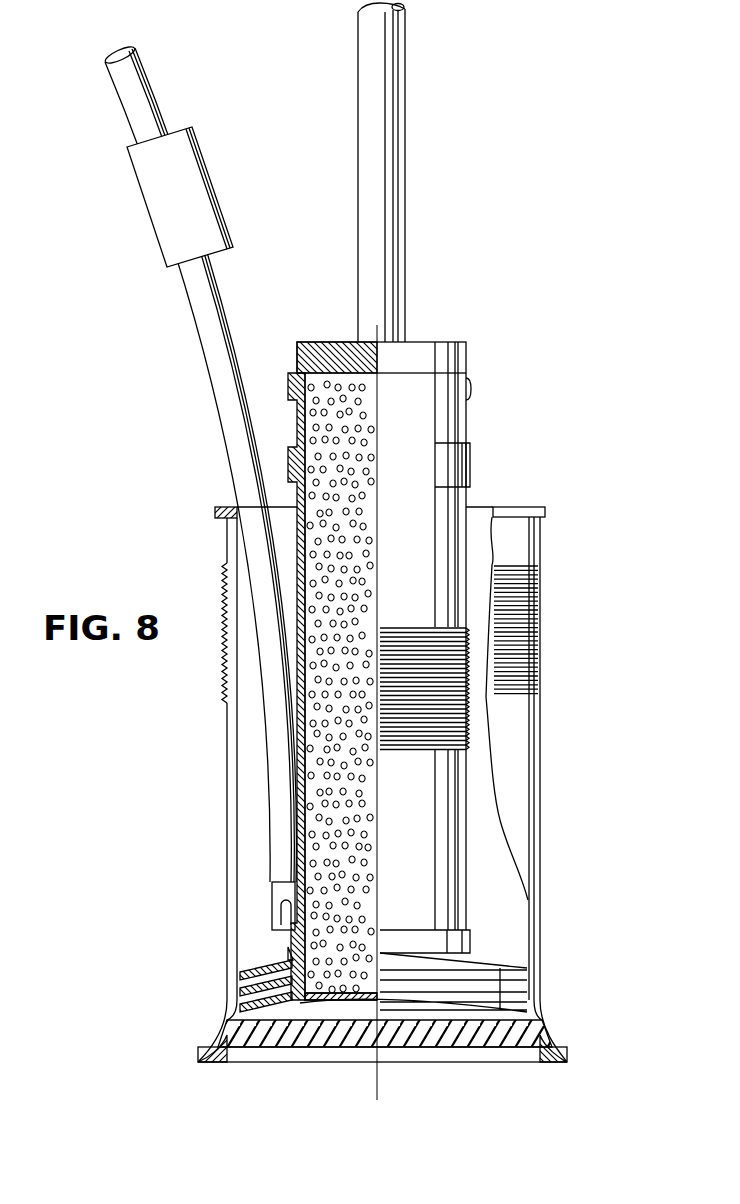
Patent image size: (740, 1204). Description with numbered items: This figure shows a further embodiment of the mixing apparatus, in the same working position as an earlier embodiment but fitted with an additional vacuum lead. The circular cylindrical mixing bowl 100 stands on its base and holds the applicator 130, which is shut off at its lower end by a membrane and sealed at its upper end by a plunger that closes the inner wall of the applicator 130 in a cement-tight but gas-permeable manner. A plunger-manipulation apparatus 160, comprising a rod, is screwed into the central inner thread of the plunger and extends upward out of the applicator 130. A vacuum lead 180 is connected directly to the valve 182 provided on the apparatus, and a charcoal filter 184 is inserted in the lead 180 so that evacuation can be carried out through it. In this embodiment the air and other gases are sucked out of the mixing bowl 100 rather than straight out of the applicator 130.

The mixing bowl 100 is at (547, 835).
The applicator 130 is at (470, 528).
The plunger-manipulation apparatus 160 is at (412, 187).
The vacuum lead 180 is at (222, 357).
The valve 182 is at (287, 938).
The charcoal filter 184 is at (165, 213).